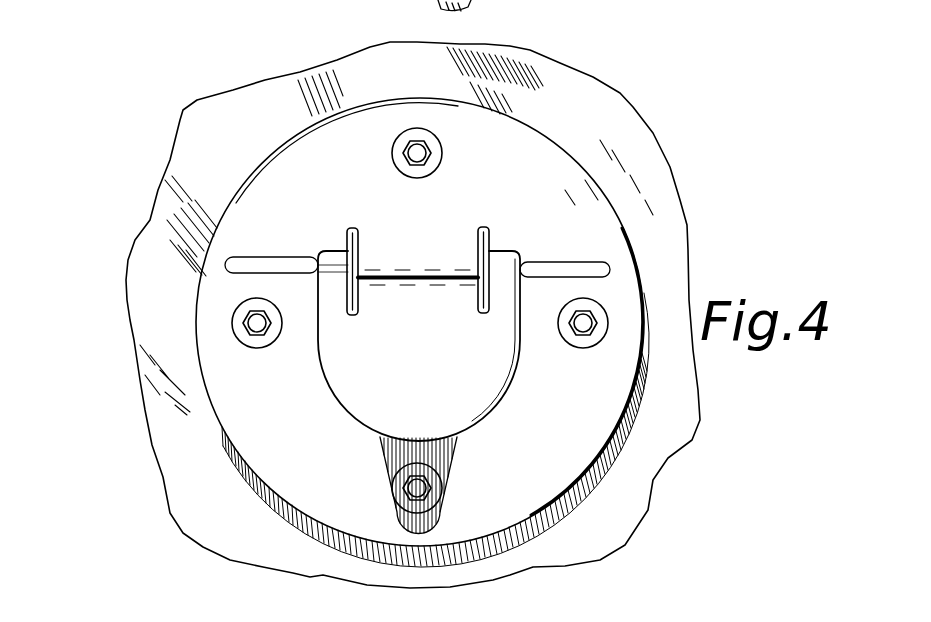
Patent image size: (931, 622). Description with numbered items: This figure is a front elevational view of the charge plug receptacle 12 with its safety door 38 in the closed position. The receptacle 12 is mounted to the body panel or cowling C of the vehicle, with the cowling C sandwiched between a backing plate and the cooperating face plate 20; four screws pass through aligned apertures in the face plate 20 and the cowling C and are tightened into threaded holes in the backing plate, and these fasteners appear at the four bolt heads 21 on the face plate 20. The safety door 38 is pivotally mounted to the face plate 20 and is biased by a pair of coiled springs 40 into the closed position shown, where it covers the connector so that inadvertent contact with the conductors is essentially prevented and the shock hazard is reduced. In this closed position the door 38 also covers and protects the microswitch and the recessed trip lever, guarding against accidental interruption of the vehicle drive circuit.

The charge plug receptacle 12 is at (258, 79).
The face plate 20 is at (540, 454).
The bolts 21 is at (417, 153).
The safety door 38 is at (427, 384).
The coiled springs 40 is at (348, 237).
The cowling C is at (600, 123).